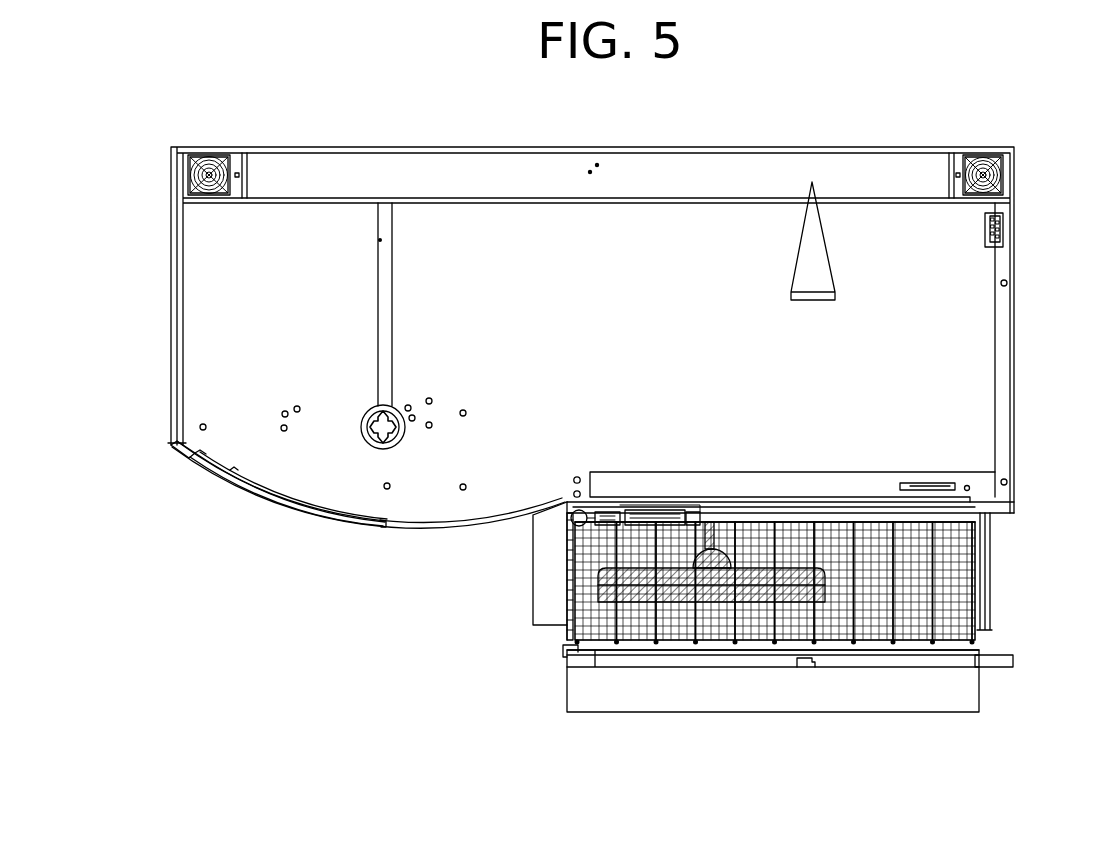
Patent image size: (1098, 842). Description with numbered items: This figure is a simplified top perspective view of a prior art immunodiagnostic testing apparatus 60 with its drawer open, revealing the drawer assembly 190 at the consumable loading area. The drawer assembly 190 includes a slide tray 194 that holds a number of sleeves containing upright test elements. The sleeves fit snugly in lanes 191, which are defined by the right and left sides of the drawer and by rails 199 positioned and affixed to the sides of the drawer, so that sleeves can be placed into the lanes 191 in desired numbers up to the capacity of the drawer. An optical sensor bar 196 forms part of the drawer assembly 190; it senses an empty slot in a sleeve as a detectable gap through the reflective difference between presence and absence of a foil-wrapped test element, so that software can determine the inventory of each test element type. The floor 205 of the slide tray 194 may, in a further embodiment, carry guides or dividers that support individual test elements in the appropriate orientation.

The testing apparatus 60 is at (963, 322).
The drawer assembly 190 is at (565, 657).
The lanes 191 is at (712, 620).
The slide tray 194 is at (975, 642).
The sensor bar 196 is at (678, 603).
The rails 199 is at (853, 610).
The floor 205 is at (953, 527).